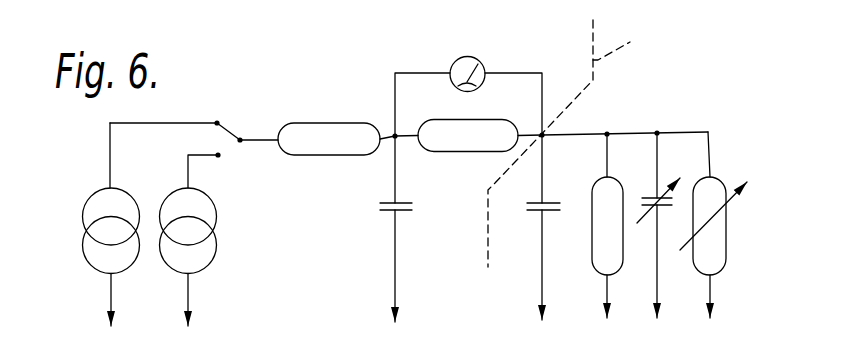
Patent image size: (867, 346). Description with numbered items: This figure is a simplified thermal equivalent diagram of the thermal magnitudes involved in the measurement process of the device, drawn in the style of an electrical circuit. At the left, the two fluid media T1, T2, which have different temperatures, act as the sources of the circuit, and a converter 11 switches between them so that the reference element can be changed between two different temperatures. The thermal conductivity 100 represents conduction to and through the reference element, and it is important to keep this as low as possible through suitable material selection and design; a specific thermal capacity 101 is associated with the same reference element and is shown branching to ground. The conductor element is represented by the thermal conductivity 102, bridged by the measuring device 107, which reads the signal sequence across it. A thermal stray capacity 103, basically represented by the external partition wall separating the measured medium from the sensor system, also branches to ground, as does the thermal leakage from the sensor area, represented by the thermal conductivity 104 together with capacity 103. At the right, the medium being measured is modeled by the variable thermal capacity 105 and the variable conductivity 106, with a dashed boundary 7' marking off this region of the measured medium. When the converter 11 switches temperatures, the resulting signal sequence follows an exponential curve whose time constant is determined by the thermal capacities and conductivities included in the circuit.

The fluid medium T1 is at (98, 203).
The fluid medium T2 is at (206, 205).
The converter 11 is at (226, 122).
The thermal conductivity 100 is at (325, 133).
The capacity 101 is at (400, 200).
The thermal conductivity 102 is at (450, 130).
The thermal stray capacity 103 is at (545, 199).
The thermal conductivity 104 is at (612, 243).
The variable thermal capacity 105 is at (649, 197).
The conductivity 106 is at (717, 185).
The measuring device 107 is at (454, 62).
The boundary of circuit section 7' is at (567, 143).